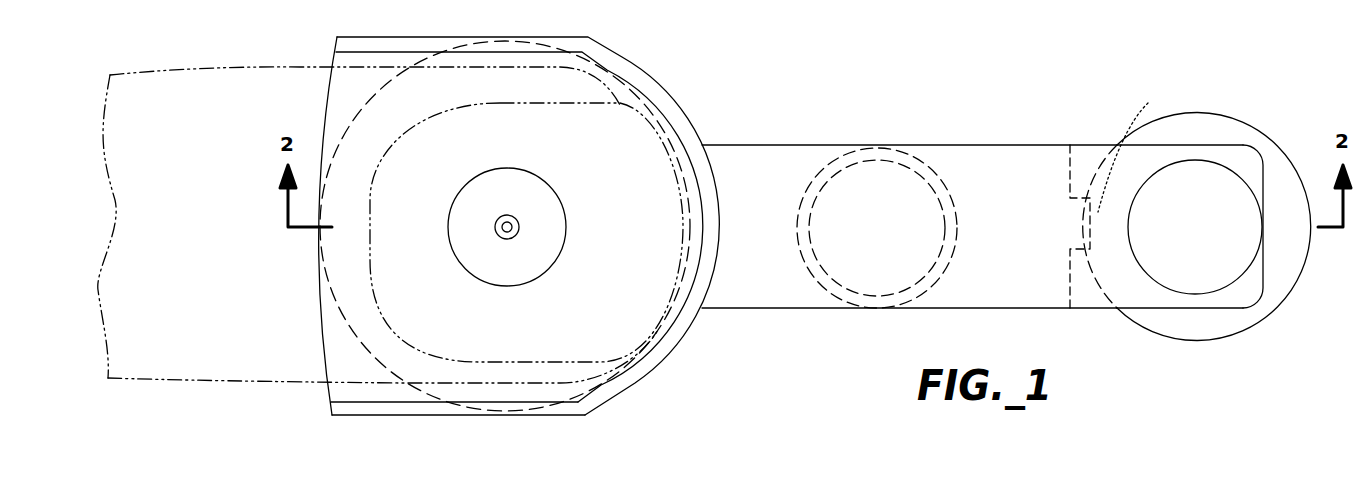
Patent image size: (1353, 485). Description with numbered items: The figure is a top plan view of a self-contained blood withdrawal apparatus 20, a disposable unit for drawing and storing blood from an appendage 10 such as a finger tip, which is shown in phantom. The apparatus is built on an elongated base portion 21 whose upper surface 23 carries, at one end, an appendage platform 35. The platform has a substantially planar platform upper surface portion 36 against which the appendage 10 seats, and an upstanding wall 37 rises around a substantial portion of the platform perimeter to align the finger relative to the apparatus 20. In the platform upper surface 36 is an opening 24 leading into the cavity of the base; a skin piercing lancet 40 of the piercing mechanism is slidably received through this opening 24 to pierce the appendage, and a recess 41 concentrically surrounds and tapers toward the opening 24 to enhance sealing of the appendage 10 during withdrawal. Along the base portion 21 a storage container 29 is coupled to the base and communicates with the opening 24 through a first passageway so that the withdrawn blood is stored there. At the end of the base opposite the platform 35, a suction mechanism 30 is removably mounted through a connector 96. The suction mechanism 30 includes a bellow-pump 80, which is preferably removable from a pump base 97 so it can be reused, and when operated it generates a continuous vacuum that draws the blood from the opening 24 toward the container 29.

The appendage 10 is at (303, 383).
The blood withdrawal apparatus 20 is at (982, 208).
The base portion 21 is at (792, 313).
The upper surface 23 is at (1015, 180).
The opening 24 is at (518, 228).
The storage container 29 is at (951, 262).
The suction mechanism 30 is at (1258, 335).
The appendage platform 35 is at (418, 423).
The platform upper surface portion 36 is at (381, 151).
The upstanding wall 37 is at (665, 360).
The lancet 40 is at (496, 233).
The recess 41 is at (487, 172).
The bellow-pump 80 is at (1253, 125).
The connector 96 is at (1135, 152).
The pump base 97 is at (1100, 309).